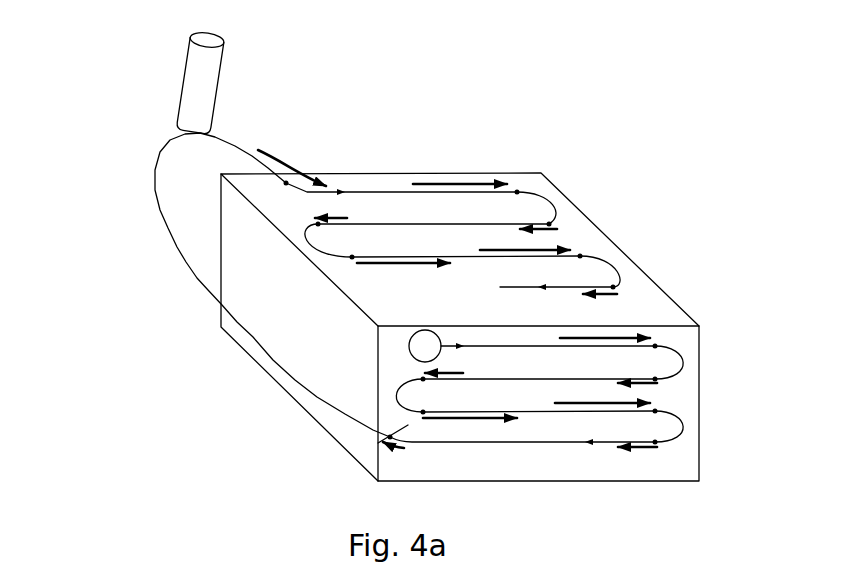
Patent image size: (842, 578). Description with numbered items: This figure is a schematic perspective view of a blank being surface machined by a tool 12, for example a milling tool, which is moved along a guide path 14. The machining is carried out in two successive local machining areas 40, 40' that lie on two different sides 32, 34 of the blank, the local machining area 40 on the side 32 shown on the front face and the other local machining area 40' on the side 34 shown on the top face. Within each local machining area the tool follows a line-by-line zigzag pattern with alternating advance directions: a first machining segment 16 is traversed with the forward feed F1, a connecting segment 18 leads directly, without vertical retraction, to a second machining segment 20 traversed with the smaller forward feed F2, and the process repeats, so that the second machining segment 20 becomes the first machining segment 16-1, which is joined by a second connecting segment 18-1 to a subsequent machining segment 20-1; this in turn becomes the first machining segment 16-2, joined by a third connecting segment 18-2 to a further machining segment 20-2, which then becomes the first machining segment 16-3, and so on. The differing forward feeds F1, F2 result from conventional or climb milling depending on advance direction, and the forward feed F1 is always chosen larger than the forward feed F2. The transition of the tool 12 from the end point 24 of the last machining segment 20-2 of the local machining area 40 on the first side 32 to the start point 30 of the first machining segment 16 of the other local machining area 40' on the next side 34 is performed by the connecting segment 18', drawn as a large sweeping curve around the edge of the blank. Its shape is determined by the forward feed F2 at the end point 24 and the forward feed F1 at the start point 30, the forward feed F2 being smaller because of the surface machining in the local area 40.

The tool 12 is at (200, 88).
The guide path 14 is at (155, 135).
The first machining segment 16 is at (470, 261).
The first machining segment 16-1 is at (486, 293).
The first machining segment 16-2 is at (503, 324).
The first machining segment 16-3 is at (522, 356).
The connecting segment 18 is at (635, 270).
The connecting segment 18' is at (225, 285).
The second connecting segment 18-1 is at (312, 247).
The third connecting segment 18-2 is at (623, 270).
The second machining segment 20 is at (486, 293).
The second machining segment 20-1 is at (503, 324).
The second machining segment 20-2 is at (522, 356).
The end point 24 is at (408, 425).
The start point 30 is at (286, 183).
The side 32 is at (538, 403).
The side 34 is at (460, 249).
The local machining area 40 is at (538, 403).
The local machining area 40' is at (460, 249).
The forward feed F1 is at (454, 291).
The forward feed F2 is at (499, 336).